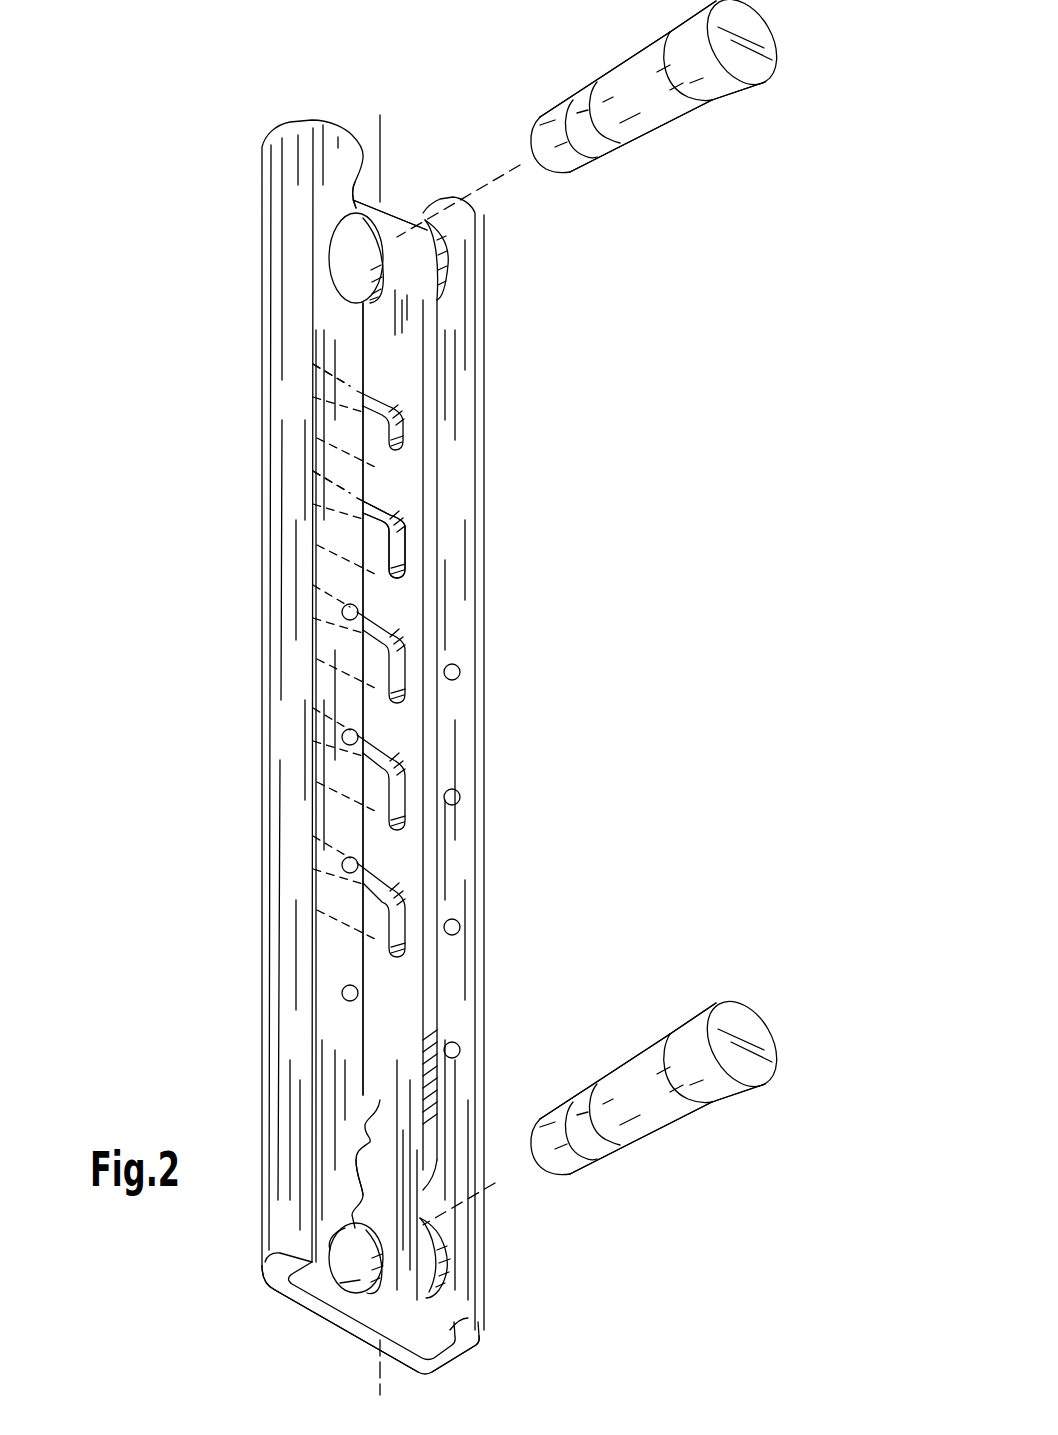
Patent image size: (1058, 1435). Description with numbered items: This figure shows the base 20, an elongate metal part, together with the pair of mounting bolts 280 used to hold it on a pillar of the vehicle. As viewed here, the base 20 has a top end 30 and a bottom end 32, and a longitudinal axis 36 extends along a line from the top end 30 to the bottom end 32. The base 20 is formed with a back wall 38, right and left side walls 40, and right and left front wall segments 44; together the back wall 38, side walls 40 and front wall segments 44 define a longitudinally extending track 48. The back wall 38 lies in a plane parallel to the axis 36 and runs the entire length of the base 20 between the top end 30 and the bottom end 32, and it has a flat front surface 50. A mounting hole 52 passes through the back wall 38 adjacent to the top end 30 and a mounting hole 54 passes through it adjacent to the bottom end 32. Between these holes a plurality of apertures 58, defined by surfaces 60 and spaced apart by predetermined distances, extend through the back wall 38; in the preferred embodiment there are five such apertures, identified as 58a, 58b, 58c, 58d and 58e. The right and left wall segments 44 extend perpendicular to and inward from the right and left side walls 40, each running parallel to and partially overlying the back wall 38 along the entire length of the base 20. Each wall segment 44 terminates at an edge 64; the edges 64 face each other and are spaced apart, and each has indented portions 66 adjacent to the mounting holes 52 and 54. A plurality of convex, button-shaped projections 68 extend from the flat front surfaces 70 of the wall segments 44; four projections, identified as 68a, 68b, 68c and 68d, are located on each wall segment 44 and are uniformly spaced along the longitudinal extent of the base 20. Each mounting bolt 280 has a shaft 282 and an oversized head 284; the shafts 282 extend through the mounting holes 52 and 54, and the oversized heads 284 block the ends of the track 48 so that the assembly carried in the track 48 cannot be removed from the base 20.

The base 20 is at (255, 350).
The top end 30 is at (407, 213).
The bottom end 32 is at (296, 1284).
The longitudinal axis 36 is at (380, 132).
The back wall 38 is at (367, 1343).
The side walls 40 is at (258, 1268).
The front wall segments 44 is at (338, 1240).
The track 48 is at (396, 1050).
The flat front surface 50 is at (380, 1100).
The mounting hole 52 is at (375, 260).
The mounting hole 54 is at (356, 1278).
The apertures 58 is at (368, 532).
The aperture 58a is at (381, 932).
The aperture 58b is at (381, 805).
The aperture 58c is at (381, 677).
The aperture 58d is at (381, 551).
The aperture 58e is at (381, 424).
The surfaces 60 is at (365, 400).
The edges 64 is at (358, 1152).
The indented portions 66 is at (353, 210).
The projections 68 is at (343, 613).
The projection 68a is at (488, 1046).
The projection 68b is at (489, 925).
The projection 68c is at (478, 787).
The projection 68d is at (483, 650).
The flat front surfaces 70 is at (343, 1003).
The mounting bolts 280 is at (600, 64).
The shaft 282 is at (640, 117).
The oversized head 284 is at (742, 32).